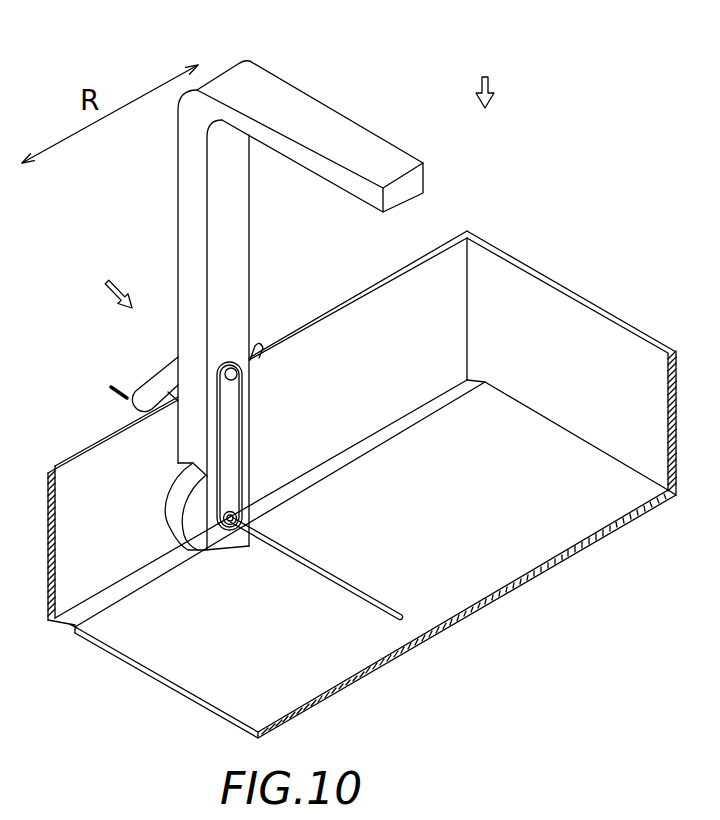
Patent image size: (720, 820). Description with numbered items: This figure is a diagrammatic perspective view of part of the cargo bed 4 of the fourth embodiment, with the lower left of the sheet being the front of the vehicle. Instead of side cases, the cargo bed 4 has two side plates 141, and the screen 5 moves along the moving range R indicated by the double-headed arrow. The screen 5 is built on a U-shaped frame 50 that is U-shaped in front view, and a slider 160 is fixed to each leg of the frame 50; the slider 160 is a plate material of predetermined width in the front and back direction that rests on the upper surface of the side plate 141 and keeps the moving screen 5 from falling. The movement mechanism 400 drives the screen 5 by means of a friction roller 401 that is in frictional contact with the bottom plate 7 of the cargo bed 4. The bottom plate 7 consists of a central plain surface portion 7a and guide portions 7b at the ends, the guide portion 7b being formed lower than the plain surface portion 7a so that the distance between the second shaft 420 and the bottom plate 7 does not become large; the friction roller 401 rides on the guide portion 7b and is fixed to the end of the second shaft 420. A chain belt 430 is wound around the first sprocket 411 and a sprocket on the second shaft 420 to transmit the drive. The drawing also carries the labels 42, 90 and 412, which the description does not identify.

The cargo bed 4 is at (485, 75).
The screen 5 is at (322, 96).
The bottom plate 7 is at (128, 672).
The plain surface portion 7a is at (175, 673).
The guide portion 7b is at (56, 628).
The side wall 42 is at (579, 292).
The U-shaped frame 50 is at (186, 245).
The handle 90 is at (125, 388).
The side plate 141 is at (357, 318).
The slider 160 is at (258, 345).
The movement mechanism 400 is at (100, 279).
The friction roller 401 is at (175, 503).
The first sprocket 411 is at (240, 396).
The lower pin 412 is at (229, 530).
The second shaft 420 is at (354, 586).
The chain belt 430 is at (242, 440).